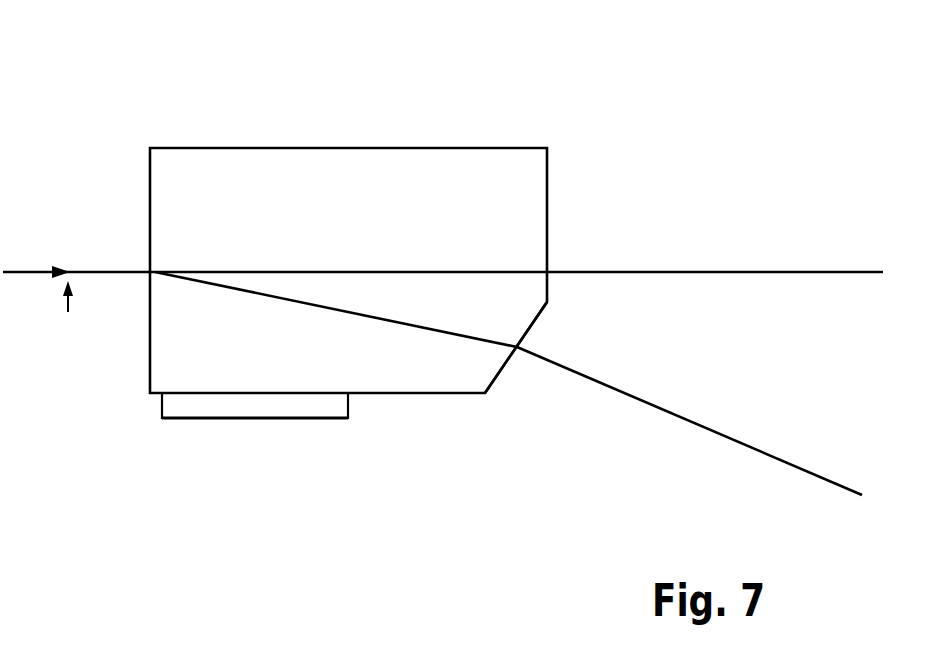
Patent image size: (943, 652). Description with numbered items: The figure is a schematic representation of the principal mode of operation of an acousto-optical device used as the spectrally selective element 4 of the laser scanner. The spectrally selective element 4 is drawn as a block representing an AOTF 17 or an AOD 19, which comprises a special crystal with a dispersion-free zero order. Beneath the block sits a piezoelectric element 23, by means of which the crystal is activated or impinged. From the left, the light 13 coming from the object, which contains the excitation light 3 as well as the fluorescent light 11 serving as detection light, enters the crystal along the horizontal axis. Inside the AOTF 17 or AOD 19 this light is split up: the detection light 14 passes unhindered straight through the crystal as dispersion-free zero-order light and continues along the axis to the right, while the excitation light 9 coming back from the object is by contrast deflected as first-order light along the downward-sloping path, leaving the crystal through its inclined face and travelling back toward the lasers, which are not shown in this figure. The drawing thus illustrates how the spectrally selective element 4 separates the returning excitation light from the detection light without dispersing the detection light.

The excitation light 3 is at (281, 244).
The fluorescent light (detection light) 11 is at (93, 270).
The spectrally selective element 4 is at (348, 261).
The excitation and detection light 9 is at (635, 405).
The light (coming from the object) 13 is at (68, 326).
The detection light (non-deflected detection light) 14 is at (700, 270).
The AOTF 17 is at (487, 408).
The AOD 19 is at (428, 395).
The piezoelectric element 23 is at (240, 405).